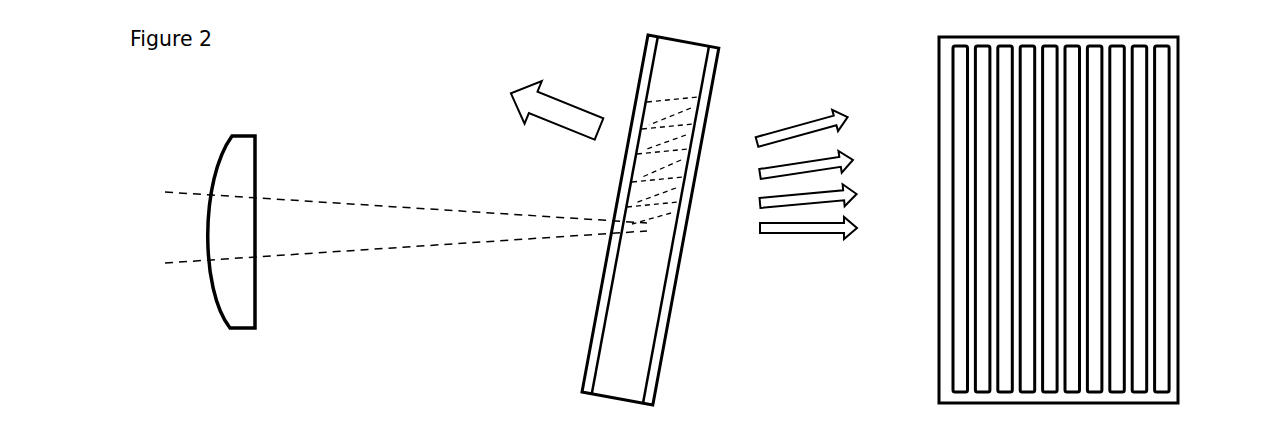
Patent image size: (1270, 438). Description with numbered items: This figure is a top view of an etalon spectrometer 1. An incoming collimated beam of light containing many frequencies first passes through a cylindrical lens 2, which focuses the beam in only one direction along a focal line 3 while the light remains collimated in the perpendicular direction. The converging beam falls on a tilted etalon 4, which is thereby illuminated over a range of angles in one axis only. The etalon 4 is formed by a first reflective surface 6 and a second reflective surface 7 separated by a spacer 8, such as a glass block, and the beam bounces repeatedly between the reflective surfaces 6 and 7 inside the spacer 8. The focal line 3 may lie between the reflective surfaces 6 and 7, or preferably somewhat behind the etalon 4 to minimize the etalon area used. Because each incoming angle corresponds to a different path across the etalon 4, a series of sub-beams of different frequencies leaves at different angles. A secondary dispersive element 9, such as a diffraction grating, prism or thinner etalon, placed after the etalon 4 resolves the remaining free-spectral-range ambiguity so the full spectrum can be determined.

The etalon spectrometer 1 is at (428, 365).
The cylindrical lens 2 is at (238, 153).
The focal line 3 is at (647, 227).
The etalon 4 is at (623, 52).
The first reflective surface 6 is at (600, 320).
The second reflective surface 7 is at (667, 323).
The spacer 8 is at (630, 205).
The secondary dispersive element 9 is at (1178, 373).